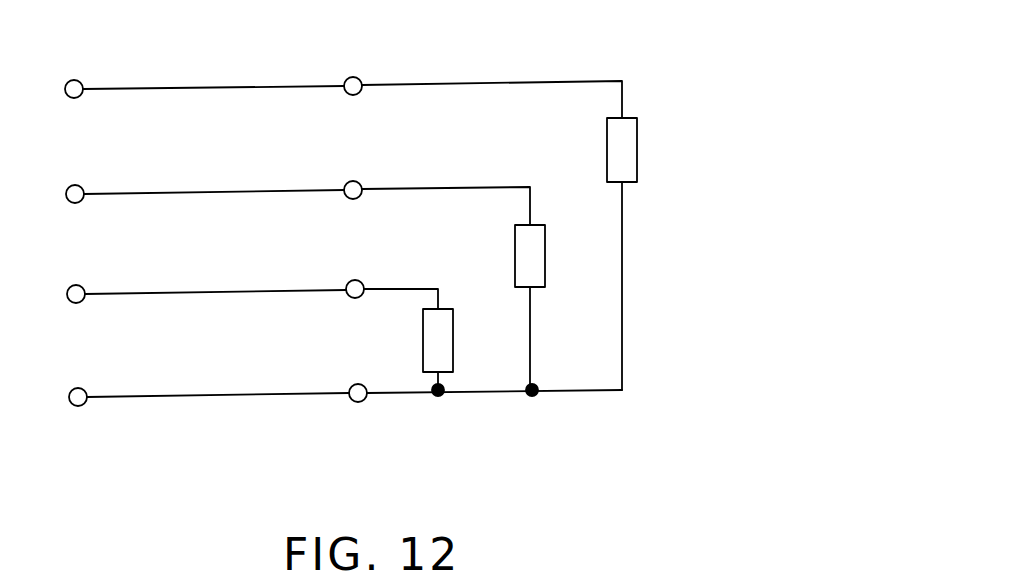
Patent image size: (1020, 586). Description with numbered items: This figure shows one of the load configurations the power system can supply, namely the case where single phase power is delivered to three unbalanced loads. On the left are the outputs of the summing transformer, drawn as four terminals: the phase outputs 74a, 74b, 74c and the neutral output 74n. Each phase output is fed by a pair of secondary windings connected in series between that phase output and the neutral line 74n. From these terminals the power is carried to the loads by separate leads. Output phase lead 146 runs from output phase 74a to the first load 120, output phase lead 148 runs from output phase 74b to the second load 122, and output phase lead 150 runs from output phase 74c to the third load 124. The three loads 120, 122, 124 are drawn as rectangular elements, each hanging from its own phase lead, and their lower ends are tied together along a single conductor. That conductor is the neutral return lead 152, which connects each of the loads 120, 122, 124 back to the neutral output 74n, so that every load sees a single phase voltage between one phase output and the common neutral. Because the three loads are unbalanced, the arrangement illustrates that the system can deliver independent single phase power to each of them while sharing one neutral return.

The phase output 74a is at (204, 69).
The phase output 74b is at (204, 173).
The phase output 74c is at (205, 275).
The neutral line 74n is at (208, 377).
The output phase lead 146 is at (415, 81).
The output phase lead 148 is at (410, 188).
The output phase lead 150 is at (380, 289).
The first load 120 is at (637, 160).
The second load 122 is at (545, 268).
The third load 124 is at (453, 348).
The neutral return lead 152 is at (597, 390).